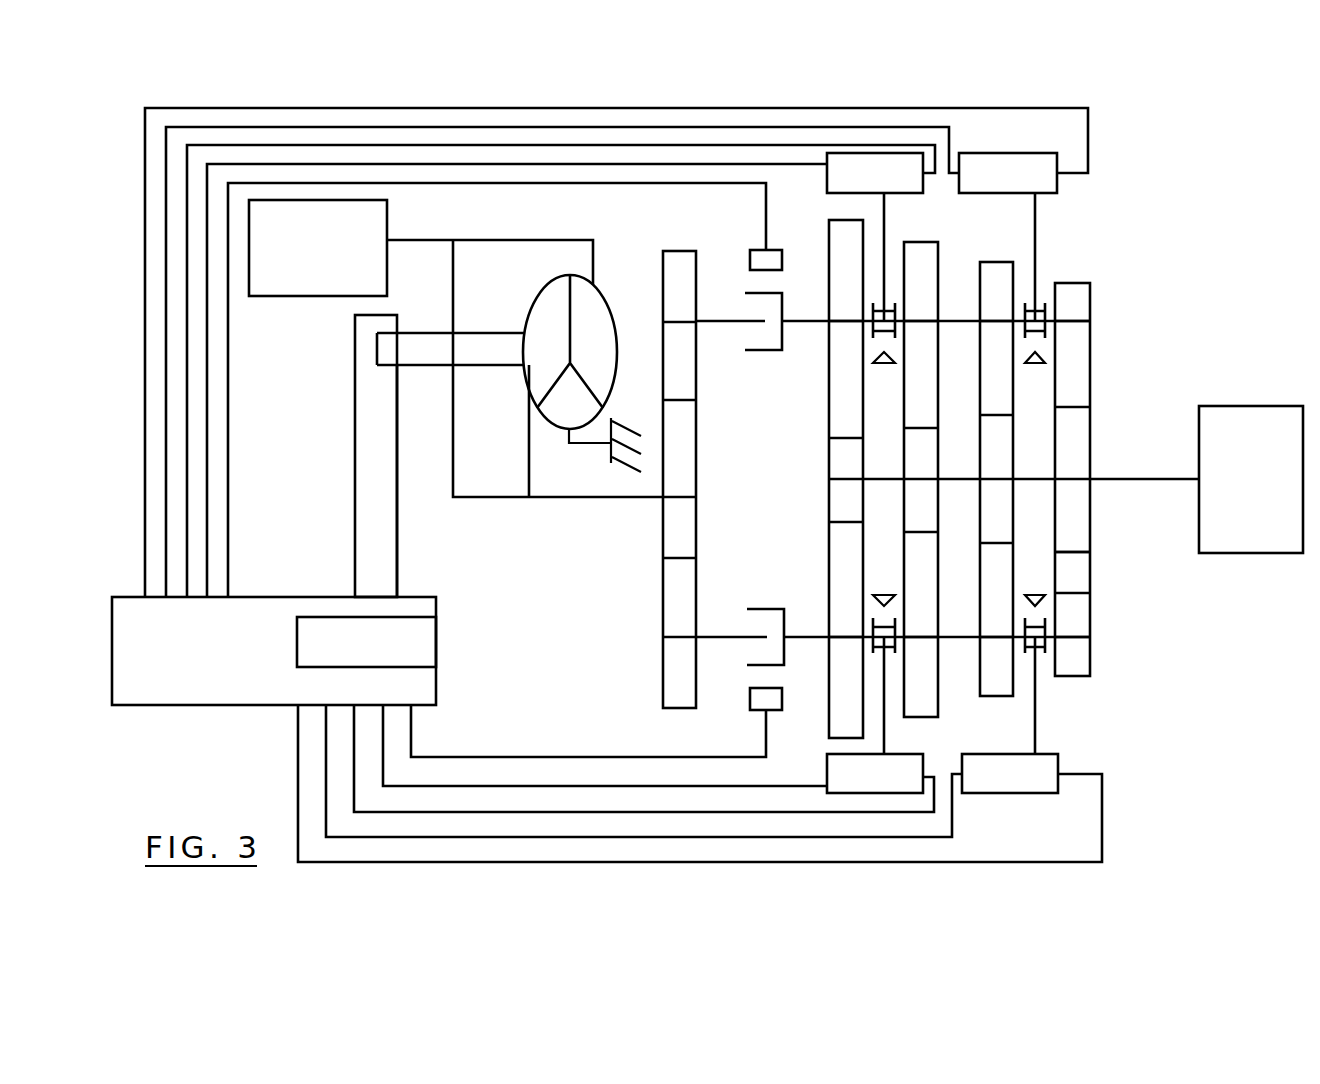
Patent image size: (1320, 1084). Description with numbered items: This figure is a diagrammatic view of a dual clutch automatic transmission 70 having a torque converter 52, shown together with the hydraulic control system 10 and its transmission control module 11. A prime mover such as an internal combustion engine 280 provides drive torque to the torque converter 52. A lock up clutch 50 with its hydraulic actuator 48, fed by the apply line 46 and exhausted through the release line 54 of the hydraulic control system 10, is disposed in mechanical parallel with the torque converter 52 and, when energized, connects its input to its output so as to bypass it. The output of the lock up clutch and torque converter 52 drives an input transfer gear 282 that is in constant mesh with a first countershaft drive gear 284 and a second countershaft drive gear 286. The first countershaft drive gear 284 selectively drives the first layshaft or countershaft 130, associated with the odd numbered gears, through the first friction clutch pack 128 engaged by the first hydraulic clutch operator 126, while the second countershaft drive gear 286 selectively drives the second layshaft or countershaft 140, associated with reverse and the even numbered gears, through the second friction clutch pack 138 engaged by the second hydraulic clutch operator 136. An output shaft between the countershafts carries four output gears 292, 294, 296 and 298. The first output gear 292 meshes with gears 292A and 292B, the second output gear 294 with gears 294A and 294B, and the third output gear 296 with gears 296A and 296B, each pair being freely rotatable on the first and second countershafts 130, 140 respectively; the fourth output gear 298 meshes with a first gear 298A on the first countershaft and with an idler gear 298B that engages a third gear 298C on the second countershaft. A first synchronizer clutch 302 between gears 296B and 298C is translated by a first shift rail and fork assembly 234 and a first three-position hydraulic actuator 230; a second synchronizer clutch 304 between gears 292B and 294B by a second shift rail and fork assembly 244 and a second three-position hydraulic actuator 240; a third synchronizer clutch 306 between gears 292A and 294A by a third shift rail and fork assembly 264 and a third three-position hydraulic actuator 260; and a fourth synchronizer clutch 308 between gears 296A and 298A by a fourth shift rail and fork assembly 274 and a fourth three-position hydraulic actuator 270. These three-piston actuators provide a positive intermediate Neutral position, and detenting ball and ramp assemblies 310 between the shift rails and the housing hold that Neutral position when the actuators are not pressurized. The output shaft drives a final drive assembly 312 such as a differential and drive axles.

The hydraulic control system 10 is at (220, 755).
The transmission control module 11 is at (415, 635).
The line 46 is at (350, 554).
The hydraulic actuator 48 is at (410, 345).
The lock up clutch 50 is at (483, 345).
The torque converter 52 is at (609, 281).
The line 54 is at (397, 545).
The automatic transmission 70 is at (1198, 211).
The first hydraulic clutch operator 126 is at (767, 263).
The first friction clutch pack 128 is at (745, 325).
The first layshaft or countershaft 130 is at (813, 325).
The second hydraulic clutch operator 136 is at (770, 698).
The second friction clutch pack 138 is at (777, 612).
The second layshaft or countershaft 140 is at (797, 635).
The first three-position hydraulic actuator 230 is at (1053, 836).
The first shift rail and fork assembly 234 is at (1035, 748).
The second three-position hydraulic actuator 240 is at (856, 874).
The second shift rail and fork assembly 244 is at (885, 733).
The third three-position hydraulic actuator 260 is at (923, 100).
The third shift rail and fork assembly 264 is at (885, 228).
The fourth three-position hydraulic actuator 270 is at (1100, 149).
The fourth shift rail and fork assembly 274 is at (1037, 215).
The internal combustion engine 280 is at (315, 268).
The input transfer gear 282 is at (680, 523).
The first layshaft or countershaft drive gear 284 is at (680, 288).
The second layshaft or countershaft drive gear 286 is at (677, 673).
The first output gear 292 is at (843, 453).
The gear 292A is at (842, 263).
The gear 292B is at (846, 728).
The second output gear 294 is at (918, 499).
The gear 294A is at (925, 257).
The gear 294B is at (927, 698).
The third output gear 296 is at (997, 456).
The gear 296A is at (1000, 286).
The gear 296B is at (997, 690).
The fourth output gear 298 is at (1073, 500).
The first gear 298A is at (1072, 297).
The idler gear 298B is at (1073, 570).
The third gear 298C is at (1070, 662).
The first synchronizer clutch 302 is at (1046, 631).
The second synchronizer clutch 304 is at (890, 658).
The third synchronizer clutch 306 is at (888, 355).
The fourth synchronizer clutch 308 is at (1036, 330).
The detenting ball and ramp assemblies 310 is at (1036, 364).
The final drive assembly 312 is at (1243, 425).